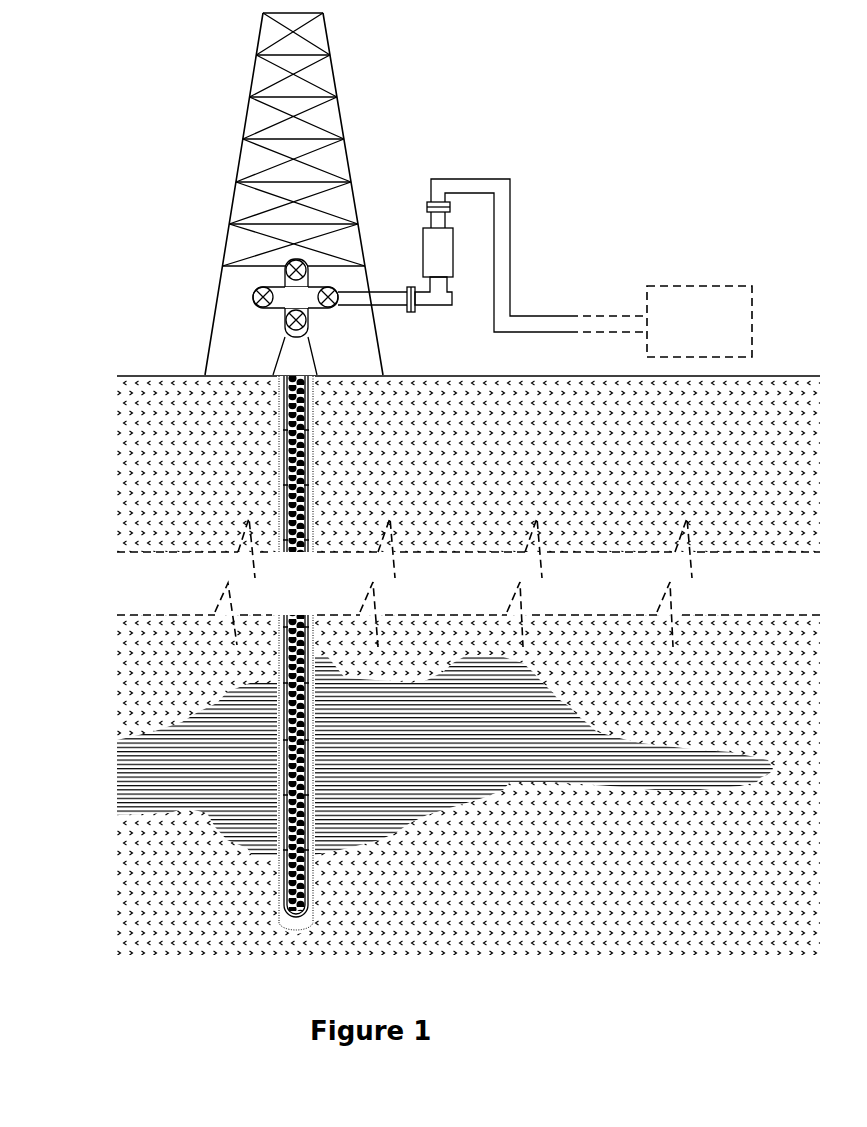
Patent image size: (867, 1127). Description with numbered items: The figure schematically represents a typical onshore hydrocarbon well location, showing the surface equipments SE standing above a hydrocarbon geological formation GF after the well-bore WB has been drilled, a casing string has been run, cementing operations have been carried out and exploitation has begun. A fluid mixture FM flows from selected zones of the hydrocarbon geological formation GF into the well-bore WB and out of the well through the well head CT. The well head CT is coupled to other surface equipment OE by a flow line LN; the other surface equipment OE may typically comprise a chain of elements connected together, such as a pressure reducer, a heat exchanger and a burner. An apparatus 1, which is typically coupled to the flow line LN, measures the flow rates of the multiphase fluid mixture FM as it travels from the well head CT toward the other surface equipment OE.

The surface equipments SE is at (243, 137).
The well head CT is at (287, 290).
The apparatus 1 is at (452, 236).
The flow line LN is at (540, 318).
The other surface equipment OE is at (710, 290).
The well-bore WB is at (277, 443).
The fluid mixture FM is at (287, 650).
The hydrocarbon geological formation GF is at (178, 787).